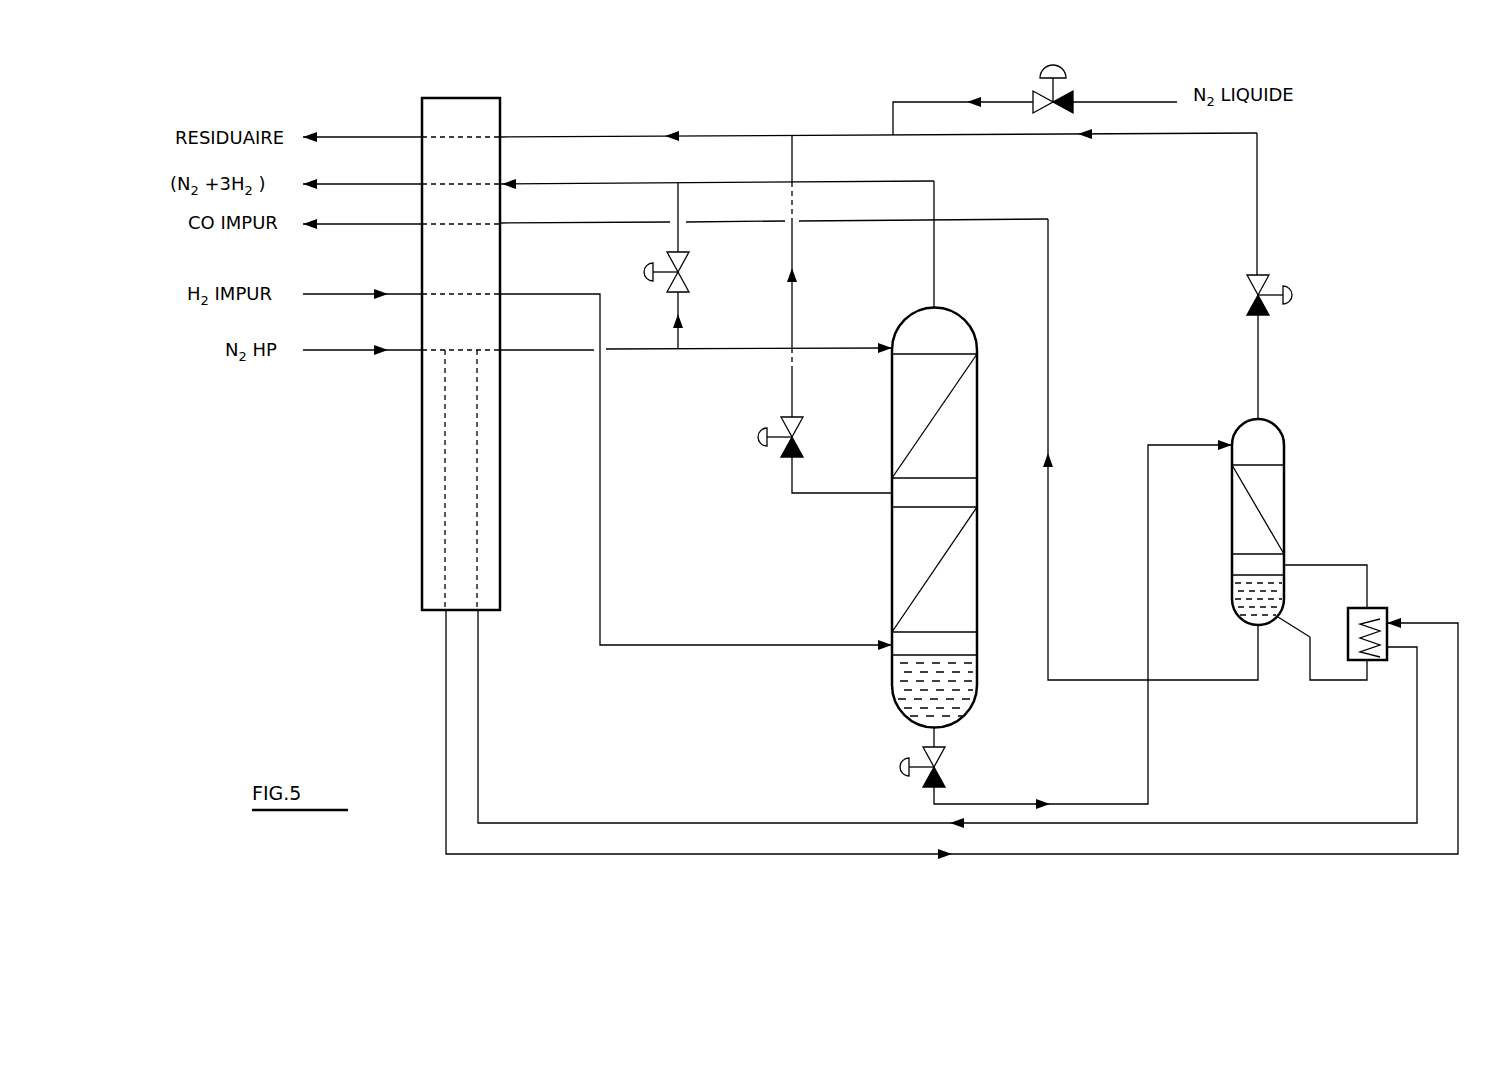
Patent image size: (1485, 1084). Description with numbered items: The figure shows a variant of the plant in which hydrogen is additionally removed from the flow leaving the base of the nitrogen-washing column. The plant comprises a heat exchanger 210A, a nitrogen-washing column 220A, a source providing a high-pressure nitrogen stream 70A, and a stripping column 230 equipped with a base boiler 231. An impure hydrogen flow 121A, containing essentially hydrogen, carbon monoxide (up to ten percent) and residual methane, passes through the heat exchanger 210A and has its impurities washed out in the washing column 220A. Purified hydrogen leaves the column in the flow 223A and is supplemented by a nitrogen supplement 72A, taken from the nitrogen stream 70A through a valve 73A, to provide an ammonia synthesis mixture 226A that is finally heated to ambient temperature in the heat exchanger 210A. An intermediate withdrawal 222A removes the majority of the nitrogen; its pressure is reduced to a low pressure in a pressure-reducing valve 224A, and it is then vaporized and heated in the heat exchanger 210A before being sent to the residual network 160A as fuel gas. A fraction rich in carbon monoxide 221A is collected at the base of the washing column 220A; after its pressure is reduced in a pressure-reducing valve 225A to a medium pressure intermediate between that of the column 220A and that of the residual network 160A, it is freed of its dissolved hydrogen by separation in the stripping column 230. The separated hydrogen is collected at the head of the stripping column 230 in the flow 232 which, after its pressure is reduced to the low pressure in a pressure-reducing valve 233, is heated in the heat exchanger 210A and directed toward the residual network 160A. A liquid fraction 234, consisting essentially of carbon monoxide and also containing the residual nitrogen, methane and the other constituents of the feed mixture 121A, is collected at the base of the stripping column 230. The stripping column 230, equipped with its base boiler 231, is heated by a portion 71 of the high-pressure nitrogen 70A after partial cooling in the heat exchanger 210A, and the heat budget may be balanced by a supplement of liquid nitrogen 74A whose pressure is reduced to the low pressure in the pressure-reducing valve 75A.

The residual network 160A is at (338, 137).
The heat exchanger 210A is at (462, 98).
The ammonia synthesis mixture 226A is at (578, 182).
The impure hydrogen flow 121A is at (322, 294).
The high-pressure nitrogen stream 70A is at (322, 350).
The portion of high-pressure nitrogen 71 is at (446, 755).
The nitrogen supplement 72A is at (678, 340).
The valve 73A is at (684, 265).
The liquid nitrogen supplement 74A is at (1103, 102).
The pressure-reducing valve 75A is at (1030, 100).
The nitrogen-washing column 220A is at (978, 613).
The carbon monoxide-rich fraction 221A is at (934, 734).
The intermediate withdrawal 222A is at (790, 467).
The purified hydrogen flow 223A is at (934, 290).
The pressure-reducing valve 224A is at (800, 428).
The pressure-reducing valve 225A is at (944, 759).
The stripping column 230 is at (1287, 536).
The base boiler 231 is at (1325, 682).
The separated hydrogen flow 232 is at (1258, 345).
The pressure-reducing valve 233 is at (1265, 283).
The liquid fraction 234 is at (1182, 682).